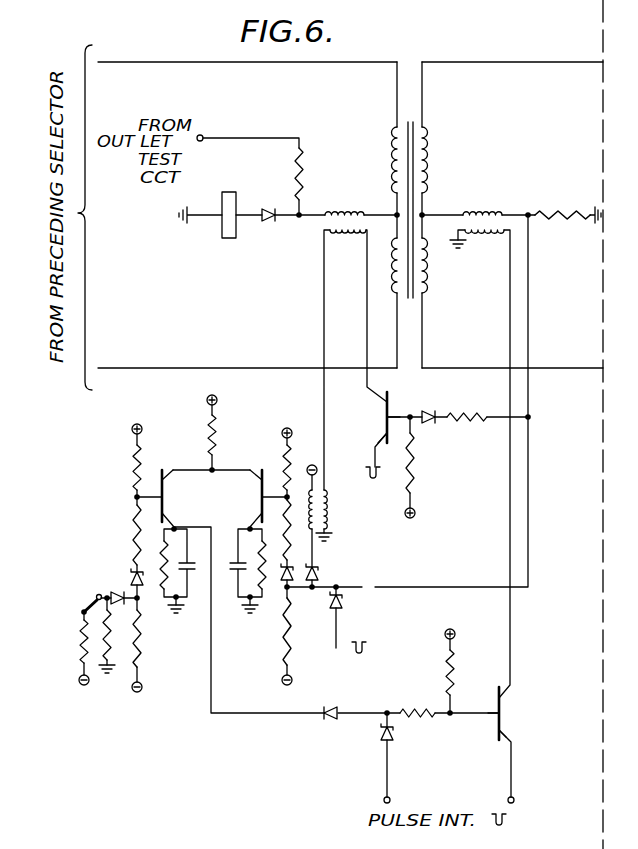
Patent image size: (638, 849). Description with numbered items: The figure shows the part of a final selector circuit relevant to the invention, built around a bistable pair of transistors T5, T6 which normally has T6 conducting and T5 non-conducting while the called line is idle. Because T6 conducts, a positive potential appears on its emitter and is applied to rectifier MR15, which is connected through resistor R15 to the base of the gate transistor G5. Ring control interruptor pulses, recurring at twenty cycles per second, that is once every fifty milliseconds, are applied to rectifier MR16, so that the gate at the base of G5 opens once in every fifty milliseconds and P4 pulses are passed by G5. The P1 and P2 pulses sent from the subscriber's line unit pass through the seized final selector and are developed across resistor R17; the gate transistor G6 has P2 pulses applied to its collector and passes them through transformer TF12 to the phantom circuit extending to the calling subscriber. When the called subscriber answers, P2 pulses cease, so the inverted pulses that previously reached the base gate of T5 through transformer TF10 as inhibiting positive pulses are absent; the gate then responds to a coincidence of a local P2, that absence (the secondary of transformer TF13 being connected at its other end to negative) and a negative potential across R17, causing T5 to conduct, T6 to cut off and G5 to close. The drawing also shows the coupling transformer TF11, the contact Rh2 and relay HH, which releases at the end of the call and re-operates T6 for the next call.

The transformer TF11 is at (408, 204).
The transformer TF12 is at (348, 213).
The transformer TF10 is at (484, 213).
The resistor R17 is at (562, 227).
The relay HH is at (240, 204).
The gate transistor G6 is at (376, 417).
The P2 pulses P2 is at (375, 561).
The transformer TF13 is at (347, 515).
The transistor T6 is at (178, 498).
The transistor T5 is at (247, 499).
The relay contact Rh2 is at (75, 601).
The rectifier MR15 is at (337, 701).
The rectifier MR16 is at (368, 741).
The resistor R15 is at (427, 724).
The gate transistor G5 is at (513, 713).
The P4 pulses P4 is at (515, 821).